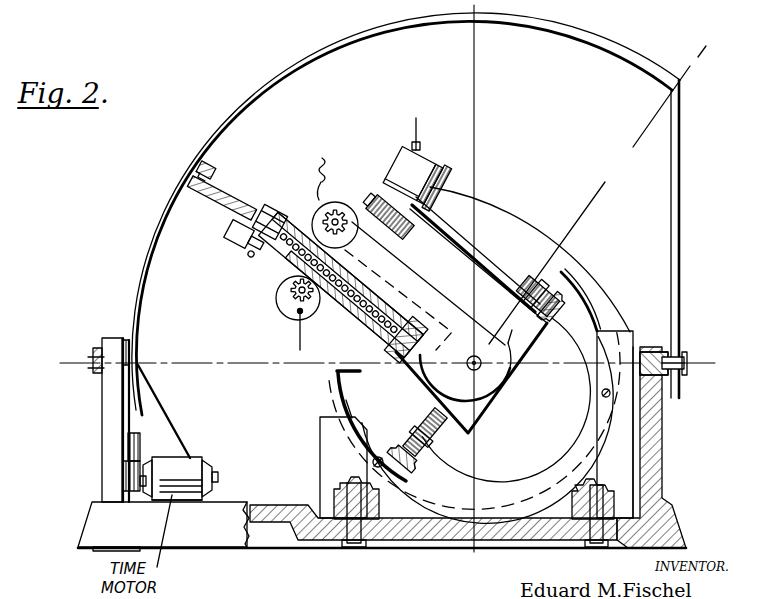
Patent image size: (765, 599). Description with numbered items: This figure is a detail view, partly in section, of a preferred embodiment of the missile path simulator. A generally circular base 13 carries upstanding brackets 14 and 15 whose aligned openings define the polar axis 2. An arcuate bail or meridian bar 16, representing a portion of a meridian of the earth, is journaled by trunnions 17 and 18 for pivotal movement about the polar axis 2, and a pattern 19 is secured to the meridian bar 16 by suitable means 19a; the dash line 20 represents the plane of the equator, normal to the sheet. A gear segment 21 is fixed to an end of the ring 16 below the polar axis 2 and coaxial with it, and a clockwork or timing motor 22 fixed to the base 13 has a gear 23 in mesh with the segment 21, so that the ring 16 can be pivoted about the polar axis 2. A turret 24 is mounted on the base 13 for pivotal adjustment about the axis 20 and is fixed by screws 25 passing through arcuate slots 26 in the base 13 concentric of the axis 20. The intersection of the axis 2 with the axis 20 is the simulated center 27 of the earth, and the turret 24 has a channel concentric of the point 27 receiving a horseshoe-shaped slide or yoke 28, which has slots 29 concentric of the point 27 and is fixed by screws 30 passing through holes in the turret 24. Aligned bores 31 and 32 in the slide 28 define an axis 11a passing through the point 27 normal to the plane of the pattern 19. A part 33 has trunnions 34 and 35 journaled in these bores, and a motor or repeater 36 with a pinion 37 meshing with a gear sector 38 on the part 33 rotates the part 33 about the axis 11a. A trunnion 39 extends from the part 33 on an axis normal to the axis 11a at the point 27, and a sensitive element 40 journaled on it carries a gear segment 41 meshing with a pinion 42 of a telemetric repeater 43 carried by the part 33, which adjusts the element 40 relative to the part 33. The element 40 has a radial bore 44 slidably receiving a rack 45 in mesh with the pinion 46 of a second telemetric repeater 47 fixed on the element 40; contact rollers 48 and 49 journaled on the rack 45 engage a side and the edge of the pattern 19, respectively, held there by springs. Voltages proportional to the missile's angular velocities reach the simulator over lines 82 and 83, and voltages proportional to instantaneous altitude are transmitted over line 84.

The polar axis 2 is at (207, 363).
The axis 11a is at (614, 172).
The base 13 is at (198, 542).
The bracket 14 is at (103, 432).
The bracket 15 is at (656, 445).
The meridian bar 16 is at (329, 57).
The trunnion 17 is at (92, 350).
The trunnion 18 is at (686, 359).
The pattern 19 is at (236, 206).
The securing means 19a is at (200, 172).
The axis 20 is at (478, 128).
The gear segment 21 is at (141, 445).
The timing motor 22 is at (195, 462).
The gear 23 is at (134, 494).
The turret 24 is at (320, 470).
The screws 25 is at (346, 546).
The arcuate slots 26 is at (372, 518).
The simulated center of the earth 27 is at (502, 374).
The slide 28 is at (522, 232).
The slots 29 is at (343, 404).
The screws 30 is at (376, 458).
The bore 31 is at (520, 276).
The bore 32 is at (440, 452).
The part 33 is at (533, 339).
The trunnion 34 is at (425, 416).
The trunnion 35 is at (559, 303).
The motor 36 is at (400, 171).
The pinion 37 is at (378, 206).
The gear sector 38 is at (445, 250).
The trunnion 39 is at (470, 368).
The sensitive element 40 is at (445, 300).
The gear segment 41 is at (334, 202).
The pinion 42 is at (322, 221).
The telemetric repeater 43 is at (321, 196).
The radial bore 44 is at (410, 370).
The rack 45 is at (355, 340).
The pinion 46 is at (298, 313).
The second telemetric repeater 47 is at (278, 302).
The contact roller 48 is at (231, 243).
The contact roller 49 is at (270, 214).
The line 82 is at (418, 131).
The line 83 is at (322, 158).
The line 84 is at (284, 335).